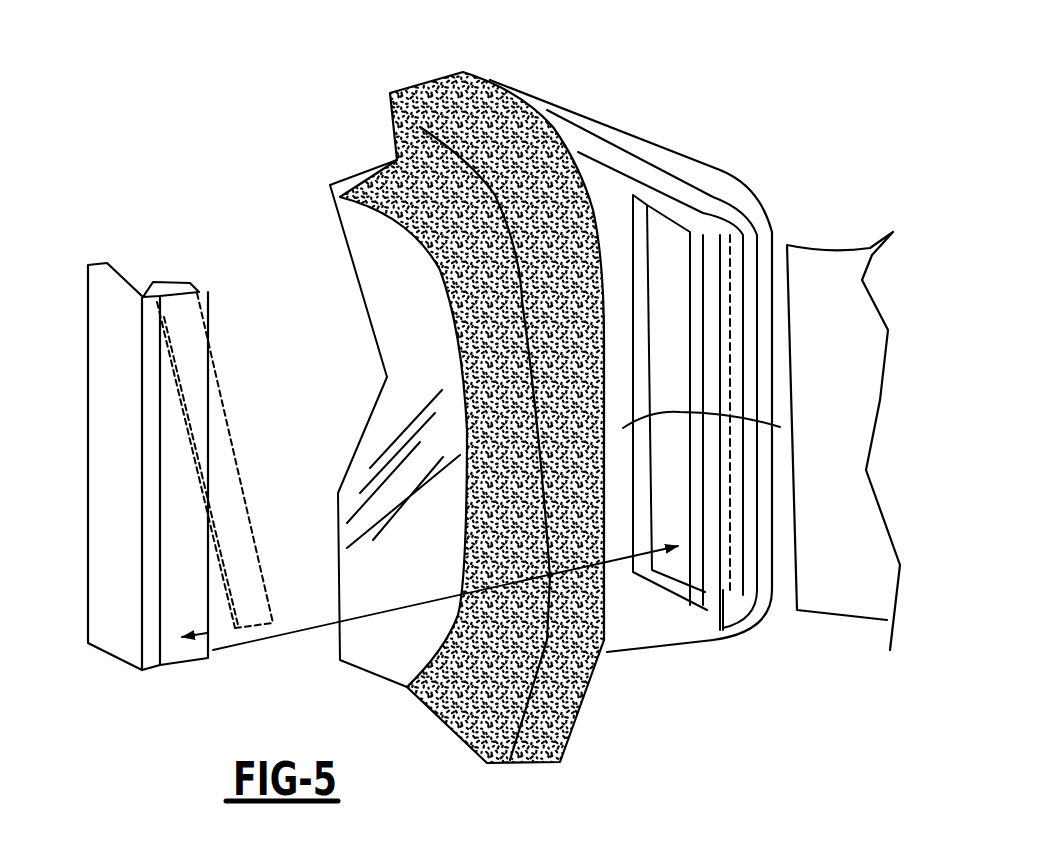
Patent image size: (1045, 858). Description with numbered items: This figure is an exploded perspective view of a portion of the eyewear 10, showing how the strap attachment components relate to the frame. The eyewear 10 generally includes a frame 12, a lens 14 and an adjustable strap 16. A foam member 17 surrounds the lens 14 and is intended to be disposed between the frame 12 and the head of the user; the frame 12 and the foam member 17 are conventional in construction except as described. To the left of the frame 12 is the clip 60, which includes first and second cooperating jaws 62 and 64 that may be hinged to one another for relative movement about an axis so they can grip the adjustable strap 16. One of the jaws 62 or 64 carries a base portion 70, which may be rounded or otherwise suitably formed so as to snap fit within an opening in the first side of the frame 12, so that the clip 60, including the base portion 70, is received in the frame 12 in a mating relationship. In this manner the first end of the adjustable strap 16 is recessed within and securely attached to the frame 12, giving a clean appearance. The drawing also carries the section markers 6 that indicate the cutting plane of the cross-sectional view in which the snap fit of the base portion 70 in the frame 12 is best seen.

The eyewear 10 is at (746, 100).
The frame 12 is at (592, 108).
The lens 14 is at (366, 278).
The adjustable strap 16 is at (853, 246).
The foam member 17 is at (420, 97).
The section line 6- 6 is at (640, 222).
The clip 60 is at (123, 194).
The first jaw 62 is at (152, 282).
The second jaw 64 is at (250, 478).
The base portion 70 is at (95, 323).